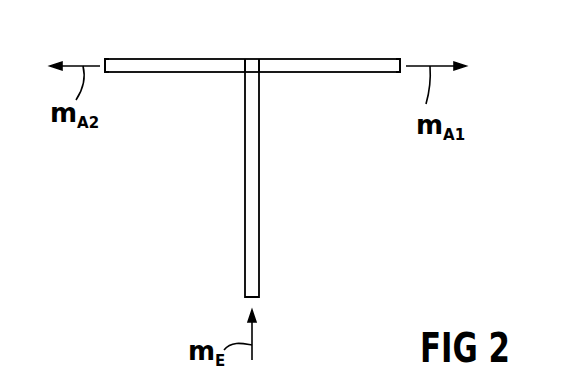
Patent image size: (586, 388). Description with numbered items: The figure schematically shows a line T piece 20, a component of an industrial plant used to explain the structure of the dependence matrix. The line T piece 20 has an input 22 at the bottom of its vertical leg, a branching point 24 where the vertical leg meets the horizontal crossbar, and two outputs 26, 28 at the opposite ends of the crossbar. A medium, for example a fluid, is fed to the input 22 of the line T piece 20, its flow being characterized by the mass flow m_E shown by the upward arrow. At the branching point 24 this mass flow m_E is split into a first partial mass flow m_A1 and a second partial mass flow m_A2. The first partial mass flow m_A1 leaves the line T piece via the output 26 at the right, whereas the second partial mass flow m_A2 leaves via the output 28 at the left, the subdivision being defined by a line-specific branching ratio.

The line T piece 20 is at (340, 73).
The input 22 is at (259, 297).
The branching point 24 is at (250, 59).
The output 26 is at (400, 59).
The output 28 is at (105, 58).